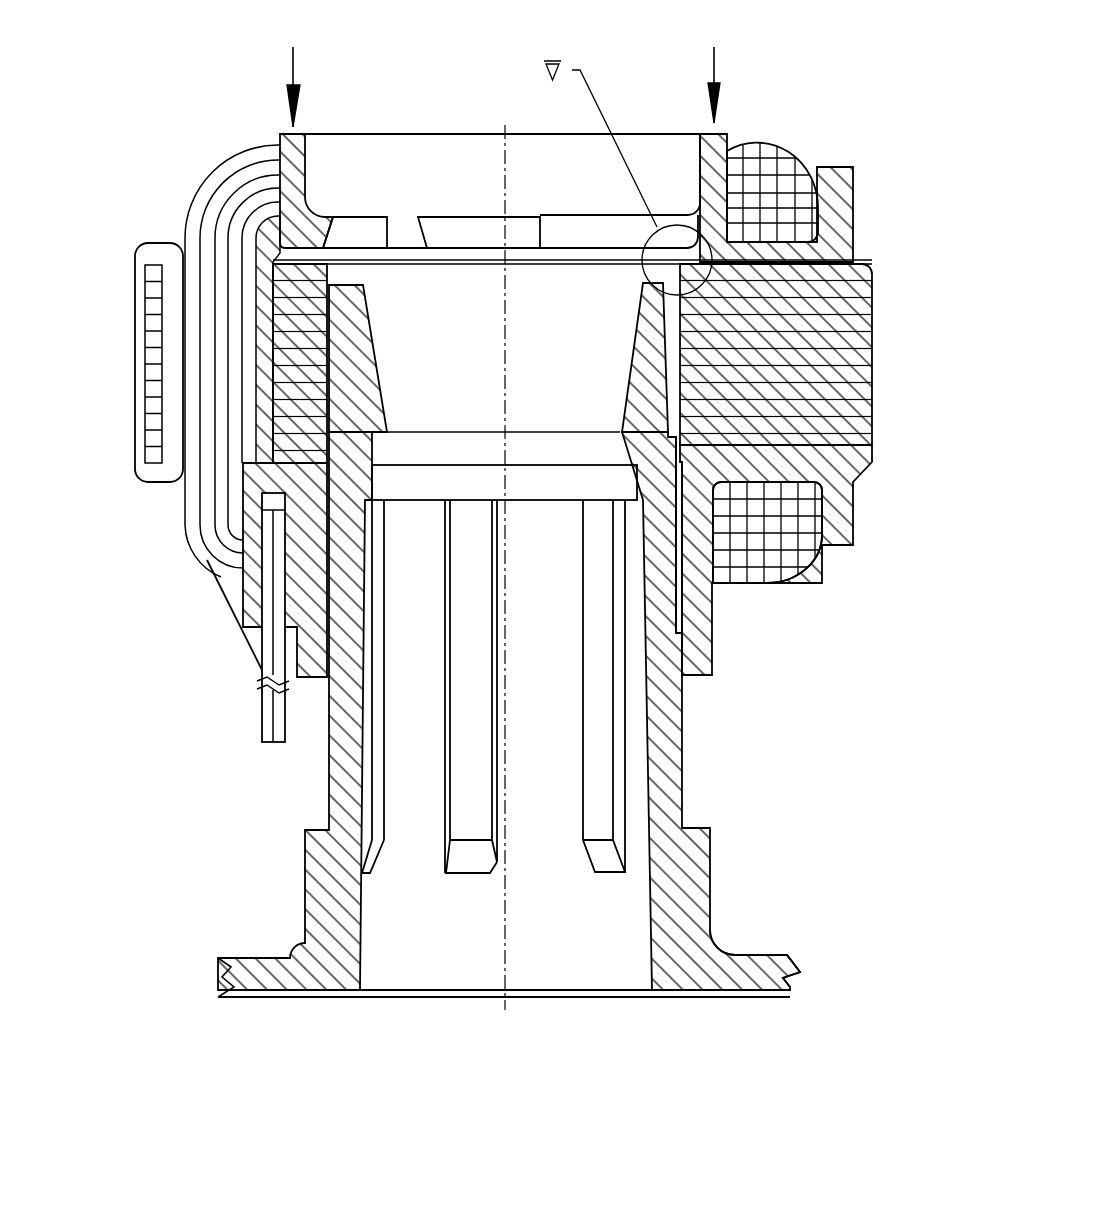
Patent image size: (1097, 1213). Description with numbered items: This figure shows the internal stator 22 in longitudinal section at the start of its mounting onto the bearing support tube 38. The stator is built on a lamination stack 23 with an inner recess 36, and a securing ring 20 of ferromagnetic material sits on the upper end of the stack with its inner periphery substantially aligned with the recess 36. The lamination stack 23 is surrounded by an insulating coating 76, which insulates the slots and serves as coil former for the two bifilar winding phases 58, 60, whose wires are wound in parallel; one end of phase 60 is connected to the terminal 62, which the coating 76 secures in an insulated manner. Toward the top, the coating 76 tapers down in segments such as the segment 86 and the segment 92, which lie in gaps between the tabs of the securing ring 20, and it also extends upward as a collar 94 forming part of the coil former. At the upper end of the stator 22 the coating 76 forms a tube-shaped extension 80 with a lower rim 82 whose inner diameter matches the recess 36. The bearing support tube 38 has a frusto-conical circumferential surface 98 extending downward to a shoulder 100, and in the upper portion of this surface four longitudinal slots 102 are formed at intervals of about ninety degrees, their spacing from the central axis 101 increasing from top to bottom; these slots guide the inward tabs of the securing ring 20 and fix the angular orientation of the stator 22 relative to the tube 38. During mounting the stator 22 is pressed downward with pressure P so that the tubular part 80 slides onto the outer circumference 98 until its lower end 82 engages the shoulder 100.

The securing ring 20 is at (397, 244).
The internal stator 22 is at (807, 137).
The lamination stack 23 is at (273, 278).
The inner recess 36 is at (373, 223).
The bearing support tube 38 is at (356, 958).
The winding phase 58 is at (740, 153).
The winding phase 60 is at (258, 643).
The terminal 62 is at (270, 725).
The insulating coating 76 is at (165, 250).
The tube-shaped extension 80 is at (708, 637).
The lower rim 82 is at (712, 682).
The tapering segment 86 is at (449, 230).
The tapering segment 92 is at (388, 258).
The collar 94 is at (712, 193).
The frusto-conical circumferential surface 98 is at (683, 740).
The shoulder 100 is at (712, 815).
The central axis 101 is at (505, 153).
The longitudinal slot 102 is at (670, 345).